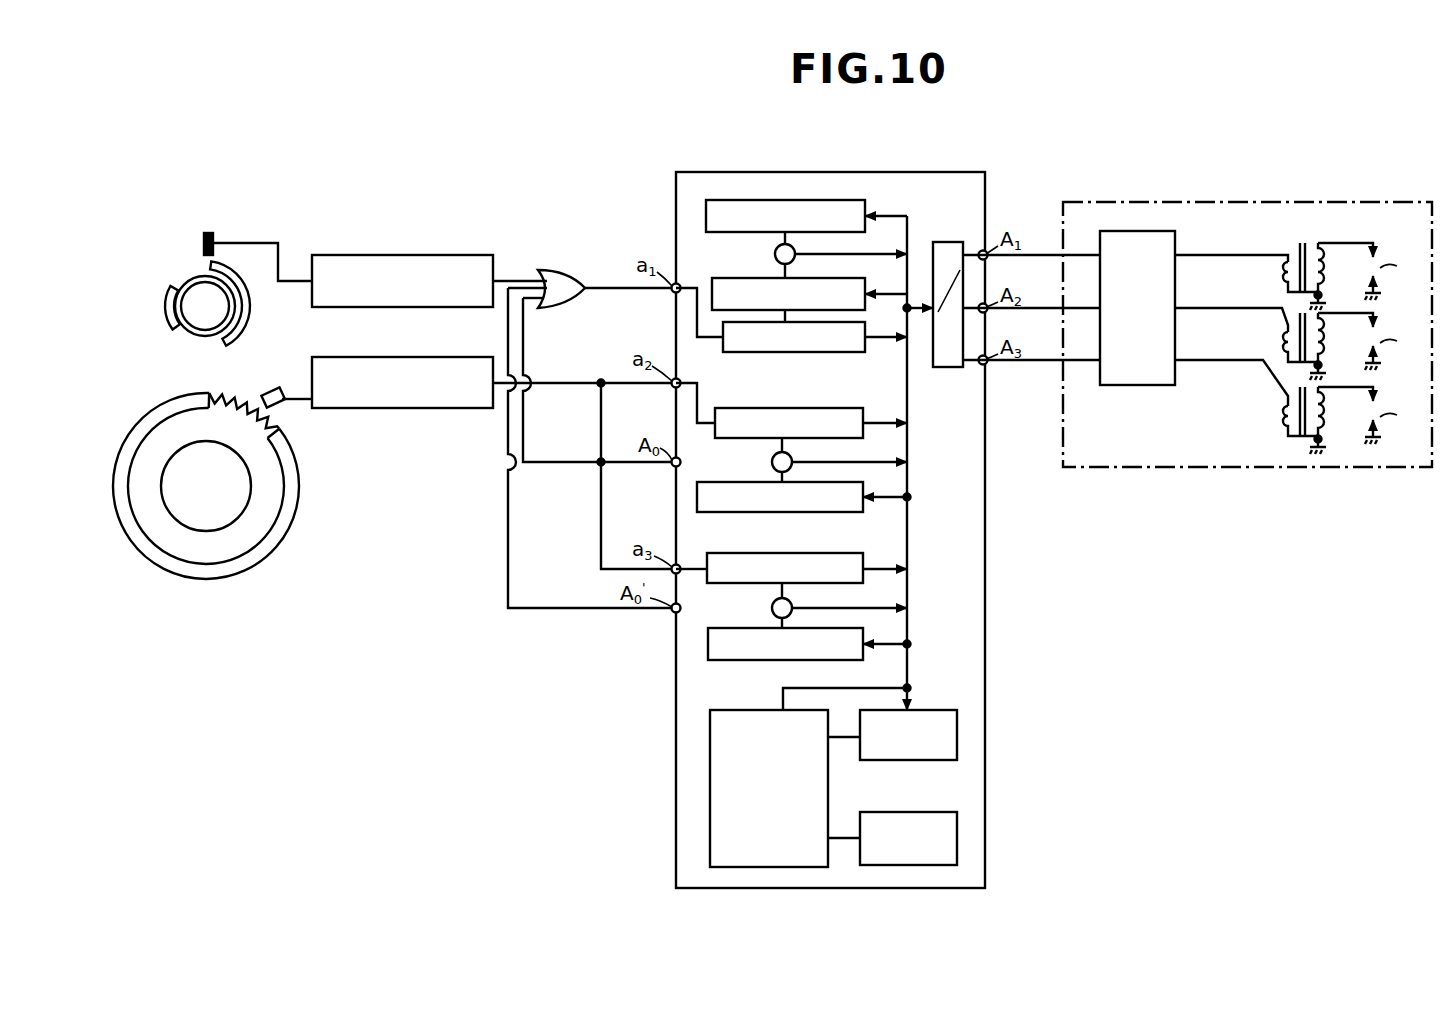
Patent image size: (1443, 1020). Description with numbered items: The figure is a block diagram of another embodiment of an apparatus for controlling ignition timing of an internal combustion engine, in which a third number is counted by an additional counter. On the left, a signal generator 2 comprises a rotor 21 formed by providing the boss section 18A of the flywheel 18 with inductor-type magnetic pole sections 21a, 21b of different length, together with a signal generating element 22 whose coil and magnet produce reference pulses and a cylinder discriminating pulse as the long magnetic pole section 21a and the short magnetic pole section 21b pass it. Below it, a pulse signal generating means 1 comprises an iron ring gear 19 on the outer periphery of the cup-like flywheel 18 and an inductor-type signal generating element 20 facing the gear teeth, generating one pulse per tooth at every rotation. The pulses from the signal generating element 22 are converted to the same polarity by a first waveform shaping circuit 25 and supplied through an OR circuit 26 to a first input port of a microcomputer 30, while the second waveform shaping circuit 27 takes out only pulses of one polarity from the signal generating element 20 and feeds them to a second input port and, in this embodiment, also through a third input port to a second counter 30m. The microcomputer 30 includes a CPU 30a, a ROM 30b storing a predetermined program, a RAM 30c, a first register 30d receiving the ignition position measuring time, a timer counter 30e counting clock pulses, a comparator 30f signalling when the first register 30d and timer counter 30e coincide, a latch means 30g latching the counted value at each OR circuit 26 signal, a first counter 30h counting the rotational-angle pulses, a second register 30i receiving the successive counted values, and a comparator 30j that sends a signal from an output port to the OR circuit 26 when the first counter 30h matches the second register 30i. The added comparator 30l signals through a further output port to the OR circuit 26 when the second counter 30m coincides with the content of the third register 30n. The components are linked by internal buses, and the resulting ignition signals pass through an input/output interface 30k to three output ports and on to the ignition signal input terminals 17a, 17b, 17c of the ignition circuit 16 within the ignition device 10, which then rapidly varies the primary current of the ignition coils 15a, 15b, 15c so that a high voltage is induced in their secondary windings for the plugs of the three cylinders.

The pulse signal generating means 1 is at (248, 392).
The signal generator 2 is at (178, 255).
The ignition device 10 is at (1242, 200).
The ignition coil 15a is at (1300, 261).
The ignition coil 15b is at (1297, 318).
The ignition coil 15c is at (1298, 392).
The ignition circuit 16 is at (1130, 385).
The ignition signal input terminal 17a is at (1083, 252).
The ignition signal input terminal 17b is at (1083, 306).
The ignition signal input terminal 17c is at (1083, 358).
The flywheel 18 is at (258, 536).
The boss section 18A is at (176, 306).
The ring gear 19 is at (281, 430).
The signal generating element 20 is at (270, 390).
The rotor 21 is at (170, 281).
The inductor-type magnetic pole section 21a is at (249, 299).
The inductor-type magnetic pole section 21b is at (175, 295).
The signal generating element 22 is at (208, 238).
The first waveform shaping circuit 25 is at (402, 255).
The OR circuit 26 is at (562, 268).
The second waveform shaping circuit 27 is at (402, 408).
The microcomputer 30 is at (920, 170).
The CPU 30a is at (728, 710).
The ROM 30b is at (866, 760).
The RAM 30c is at (922, 812).
The first register 30d is at (752, 200).
The timer counter 30e is at (742, 278).
The comparator 30f is at (775, 254).
The latch means 30g is at (776, 352).
The first counter 30h is at (815, 408).
The second register 30i is at (697, 497).
The comparator 30j is at (792, 455).
The input/output interface 30k is at (955, 242).
The comparator 30l is at (792, 602).
The second counter 30m is at (765, 553).
The third register 30n is at (708, 644).